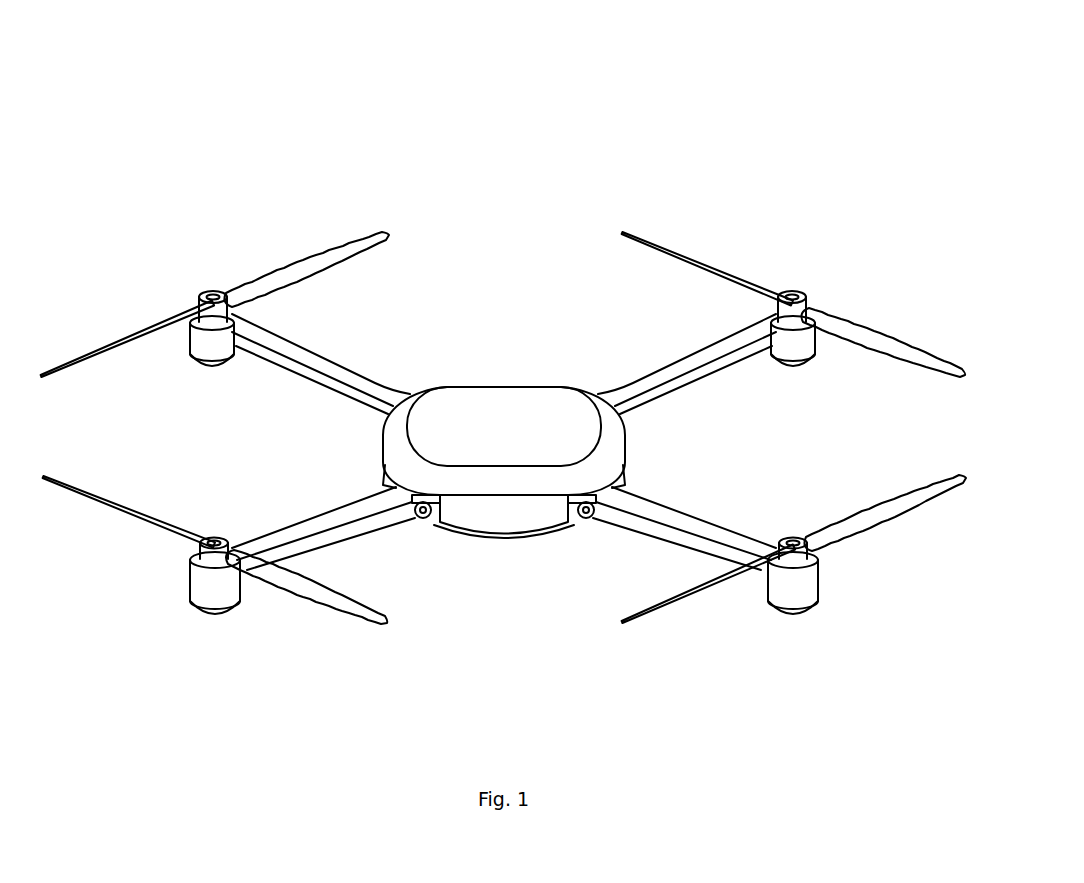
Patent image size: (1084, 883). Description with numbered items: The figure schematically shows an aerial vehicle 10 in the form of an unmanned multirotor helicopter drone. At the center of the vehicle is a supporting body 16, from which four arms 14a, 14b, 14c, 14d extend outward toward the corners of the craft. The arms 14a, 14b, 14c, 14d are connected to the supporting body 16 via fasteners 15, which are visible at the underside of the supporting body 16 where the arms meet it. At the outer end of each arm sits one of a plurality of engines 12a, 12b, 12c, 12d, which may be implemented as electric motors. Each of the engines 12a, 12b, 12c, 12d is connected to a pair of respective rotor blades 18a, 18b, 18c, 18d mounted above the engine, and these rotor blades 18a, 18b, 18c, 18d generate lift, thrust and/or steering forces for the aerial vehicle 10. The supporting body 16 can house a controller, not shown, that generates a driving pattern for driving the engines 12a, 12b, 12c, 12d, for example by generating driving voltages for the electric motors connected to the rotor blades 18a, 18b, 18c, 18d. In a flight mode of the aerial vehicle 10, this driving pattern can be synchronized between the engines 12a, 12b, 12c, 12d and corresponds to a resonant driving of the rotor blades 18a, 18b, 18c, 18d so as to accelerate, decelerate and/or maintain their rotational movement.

The aerial vehicle 10 is at (718, 129).
The engine 12a is at (804, 372).
The engine 12b is at (808, 622).
The engine 12c is at (203, 625).
The engine 12d is at (203, 379).
The arm 14a is at (646, 376).
The arm 14b is at (697, 516).
The arm 14c is at (320, 506).
The arm 14d is at (343, 370).
The fastener 15 is at (424, 518).
The supporting body 16 is at (485, 388).
The rotor blades 18a is at (692, 255).
The rotor blades 18b is at (918, 510).
The rotor blades 18c is at (61, 490).
The rotor blades 18d is at (255, 277).